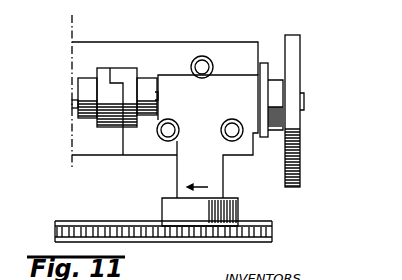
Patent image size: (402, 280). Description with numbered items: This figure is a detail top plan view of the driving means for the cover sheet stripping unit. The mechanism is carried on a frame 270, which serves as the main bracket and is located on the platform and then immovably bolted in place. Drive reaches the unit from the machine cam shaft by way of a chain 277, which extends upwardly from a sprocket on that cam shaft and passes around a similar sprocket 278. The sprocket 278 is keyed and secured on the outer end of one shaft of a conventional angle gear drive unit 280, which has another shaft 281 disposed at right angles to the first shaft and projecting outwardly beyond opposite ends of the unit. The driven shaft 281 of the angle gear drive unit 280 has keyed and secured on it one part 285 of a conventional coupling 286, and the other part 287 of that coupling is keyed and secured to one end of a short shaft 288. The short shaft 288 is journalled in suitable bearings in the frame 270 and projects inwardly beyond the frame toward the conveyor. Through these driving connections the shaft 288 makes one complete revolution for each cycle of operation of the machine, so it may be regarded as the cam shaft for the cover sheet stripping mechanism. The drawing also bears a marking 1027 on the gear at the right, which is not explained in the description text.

The frame 270 is at (203, 50).
The chain 277 is at (82, 195).
The sprocket 278 is at (166, 215).
The angle gear drive unit 280 is at (238, 82).
The driven shaft 281 is at (300, 103).
The coupling part 285 is at (135, 77).
The coupling 286 is at (118, 62).
The coupling part 287 is at (100, 77).
The short shaft 288 is at (72, 104).
The gear wheel 1027 is at (292, 162).